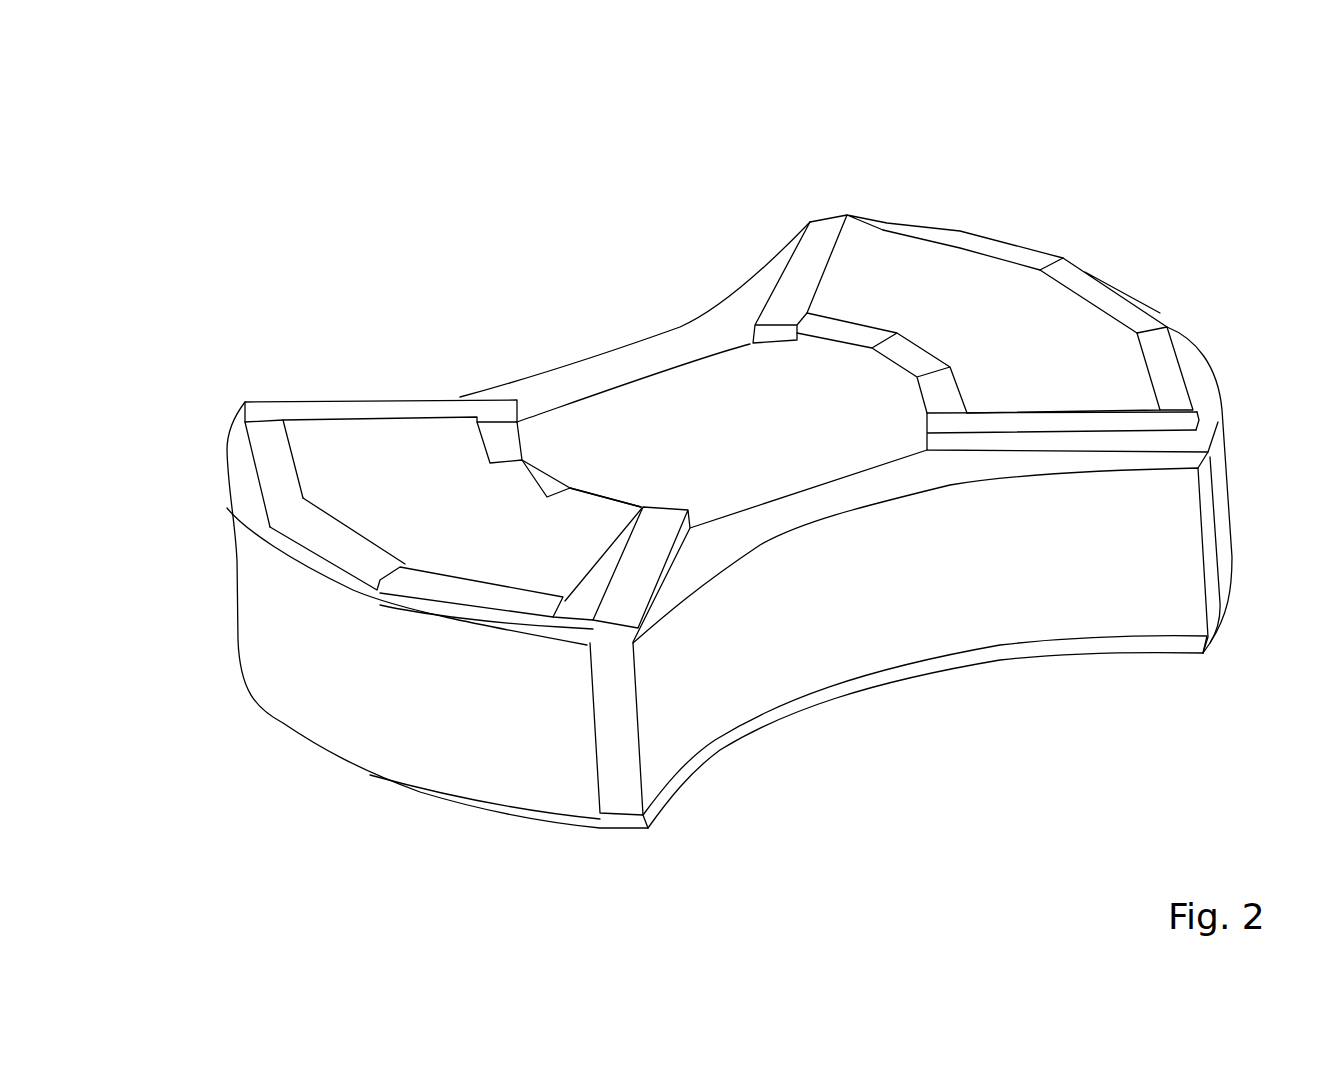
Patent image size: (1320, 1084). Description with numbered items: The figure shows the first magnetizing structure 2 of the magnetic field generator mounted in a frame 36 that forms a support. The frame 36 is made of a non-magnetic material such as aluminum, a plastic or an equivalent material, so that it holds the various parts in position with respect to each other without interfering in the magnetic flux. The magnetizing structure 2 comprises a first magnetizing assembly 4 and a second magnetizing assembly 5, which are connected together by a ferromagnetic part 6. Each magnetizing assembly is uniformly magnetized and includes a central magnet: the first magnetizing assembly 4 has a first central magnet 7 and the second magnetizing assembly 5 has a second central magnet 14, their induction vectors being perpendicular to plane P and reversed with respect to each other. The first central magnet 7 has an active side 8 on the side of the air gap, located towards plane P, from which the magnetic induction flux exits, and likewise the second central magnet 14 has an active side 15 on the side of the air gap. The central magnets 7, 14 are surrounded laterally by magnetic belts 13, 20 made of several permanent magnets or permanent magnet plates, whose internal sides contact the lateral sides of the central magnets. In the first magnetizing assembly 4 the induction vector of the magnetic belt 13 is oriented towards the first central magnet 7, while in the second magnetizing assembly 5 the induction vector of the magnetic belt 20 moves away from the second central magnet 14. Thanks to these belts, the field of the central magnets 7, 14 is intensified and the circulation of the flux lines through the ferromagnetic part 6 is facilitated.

The first magnetizing structure 2 is at (1221, 233).
The first magnetizing assembly 4 is at (345, 793).
The second magnetizing assembly 5 is at (993, 163).
The ferromagnetic part 6 is at (688, 400).
The first central magnet 7 is at (447, 447).
The active side 8 is at (392, 453).
The magnetic belt 13 is at (455, 593).
The second central magnet 14 is at (880, 283).
The active side 15 is at (937, 285).
The magnetic belt 20 is at (1167, 357).
The frame 36 is at (890, 643).